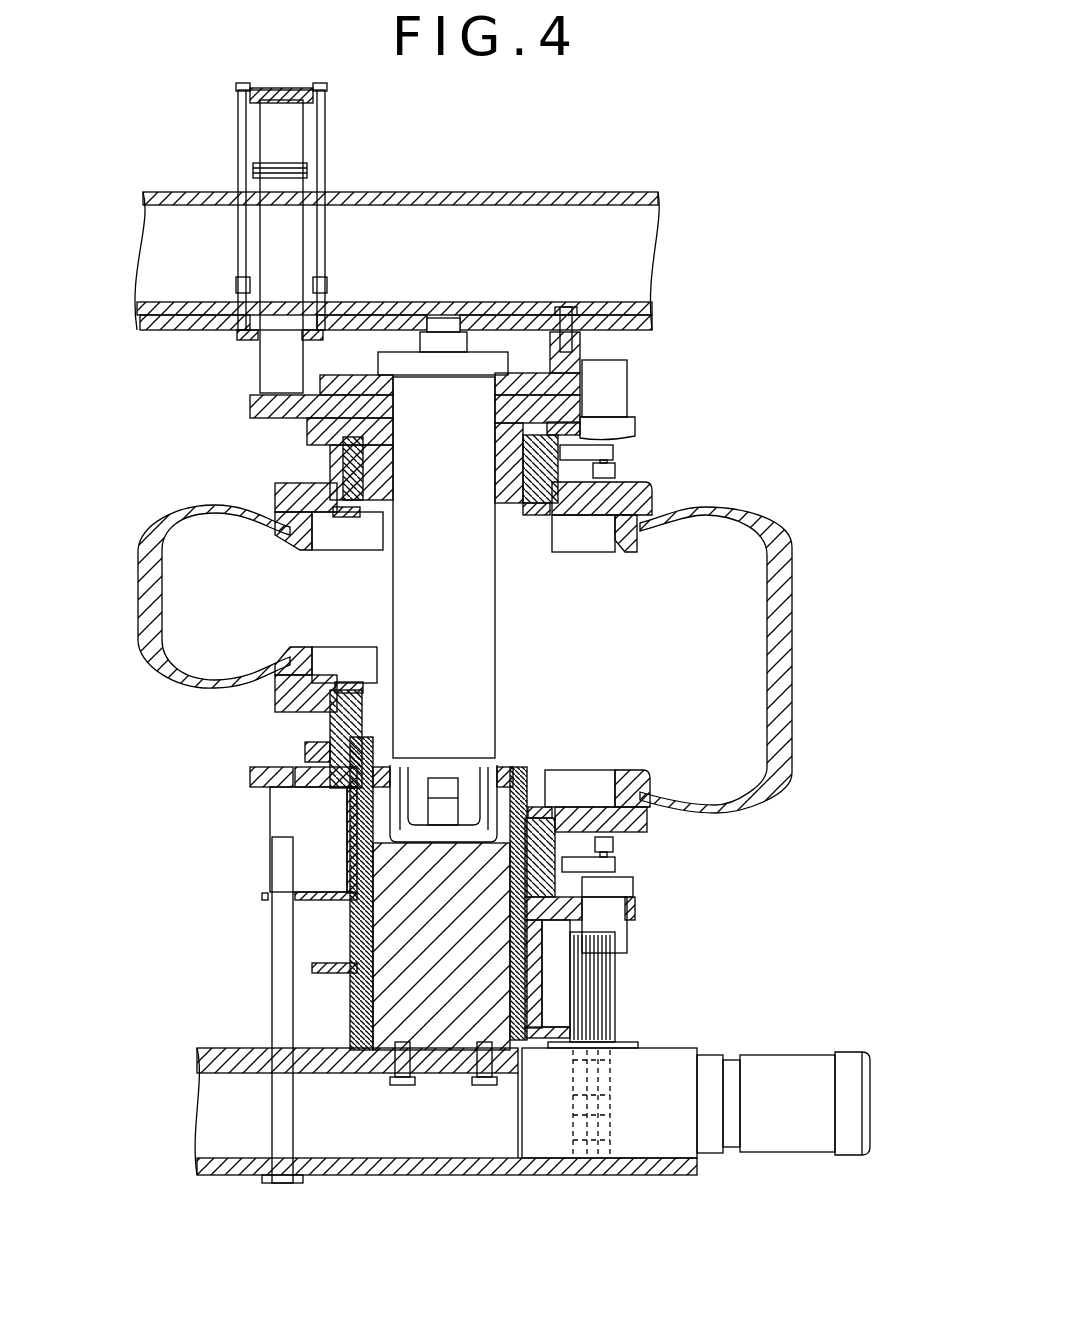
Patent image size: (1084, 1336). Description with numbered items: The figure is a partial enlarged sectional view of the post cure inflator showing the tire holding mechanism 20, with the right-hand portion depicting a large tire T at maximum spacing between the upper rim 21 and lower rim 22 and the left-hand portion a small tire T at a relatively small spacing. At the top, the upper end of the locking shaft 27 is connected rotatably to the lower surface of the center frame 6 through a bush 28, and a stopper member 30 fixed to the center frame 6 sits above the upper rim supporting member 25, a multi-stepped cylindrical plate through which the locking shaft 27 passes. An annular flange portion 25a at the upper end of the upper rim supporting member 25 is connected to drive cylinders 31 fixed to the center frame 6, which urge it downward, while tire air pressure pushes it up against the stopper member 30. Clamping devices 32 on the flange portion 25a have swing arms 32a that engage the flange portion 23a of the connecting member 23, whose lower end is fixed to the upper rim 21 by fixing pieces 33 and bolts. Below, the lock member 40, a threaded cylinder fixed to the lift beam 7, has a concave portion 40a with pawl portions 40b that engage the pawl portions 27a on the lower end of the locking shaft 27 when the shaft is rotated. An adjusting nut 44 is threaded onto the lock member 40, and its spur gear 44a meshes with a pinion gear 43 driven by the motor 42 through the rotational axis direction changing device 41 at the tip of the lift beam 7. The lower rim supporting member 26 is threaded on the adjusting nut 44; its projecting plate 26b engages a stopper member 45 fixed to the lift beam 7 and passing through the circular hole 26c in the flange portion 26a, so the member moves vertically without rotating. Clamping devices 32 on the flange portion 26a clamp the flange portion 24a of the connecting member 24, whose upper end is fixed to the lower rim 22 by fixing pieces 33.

The center frame 6 is at (462, 192).
The lift beam 7 is at (405, 1165).
The tire holding mechanism 20 is at (792, 383).
The upper rim 21 is at (283, 488).
The lower rim 22 is at (287, 697).
The connecting member 23 is at (500, 468).
The annular flange portion 23a is at (578, 430).
The connecting member 24 is at (330, 728).
The annular flange portion 24a is at (612, 890).
The upper rim supporting member 25 is at (495, 432).
The annular flange portion 25a is at (580, 403).
The lower rim supporting member 26 is at (355, 822).
The annular flange portion 26a is at (632, 905).
The projecting plate 26b is at (330, 902).
The circular hole 26c is at (283, 792).
The locking shaft 27 is at (478, 603).
The pawl portions 27a is at (437, 803).
The bush 28 is at (445, 318).
The stopper member 30 is at (550, 368).
The drive cylinders 31 is at (240, 275).
The clamping devices 32 is at (605, 375).
The swing arm 32a is at (612, 452).
The fixing pieces 33 is at (548, 515).
The lock member 40 is at (450, 1020).
The concave portion 40a is at (445, 810).
The pawl portions 40b is at (496, 790).
The rotational axis direction changing device 41 is at (650, 1140).
The motor 42 is at (797, 1137).
The pinion gear 43 is at (600, 1025).
The adjusting nut 44 is at (352, 940).
The spur gear 44a is at (350, 995).
The stopper member 45 is at (272, 965).
The tire T is at (783, 598).